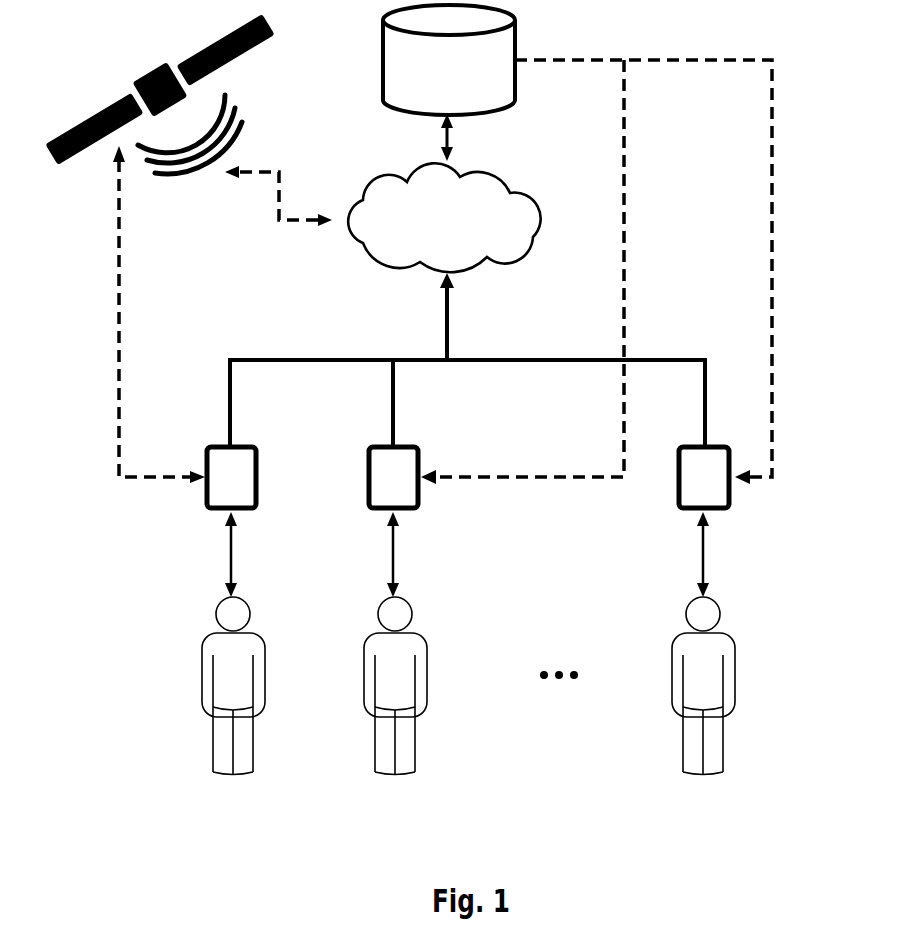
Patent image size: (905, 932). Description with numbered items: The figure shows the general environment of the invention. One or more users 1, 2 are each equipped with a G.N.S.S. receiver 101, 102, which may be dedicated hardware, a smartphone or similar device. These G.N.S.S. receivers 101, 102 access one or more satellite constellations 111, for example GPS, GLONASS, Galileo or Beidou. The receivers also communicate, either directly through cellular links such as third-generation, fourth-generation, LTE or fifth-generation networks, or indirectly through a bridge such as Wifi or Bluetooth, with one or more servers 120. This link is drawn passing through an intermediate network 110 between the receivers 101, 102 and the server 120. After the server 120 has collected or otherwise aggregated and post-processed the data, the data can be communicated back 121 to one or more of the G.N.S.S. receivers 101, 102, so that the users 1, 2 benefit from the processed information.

The user 1 is at (265, 665).
The user 2 is at (423, 655).
The G.N.S.S. receiver 101 is at (260, 450).
The G.N.S.S. receiver 102 is at (422, 450).
The network 110 is at (508, 183).
The satellite constellation 111 is at (273, 33).
The server 120 is at (520, 35).
The data communication back to receivers 121 is at (772, 283).